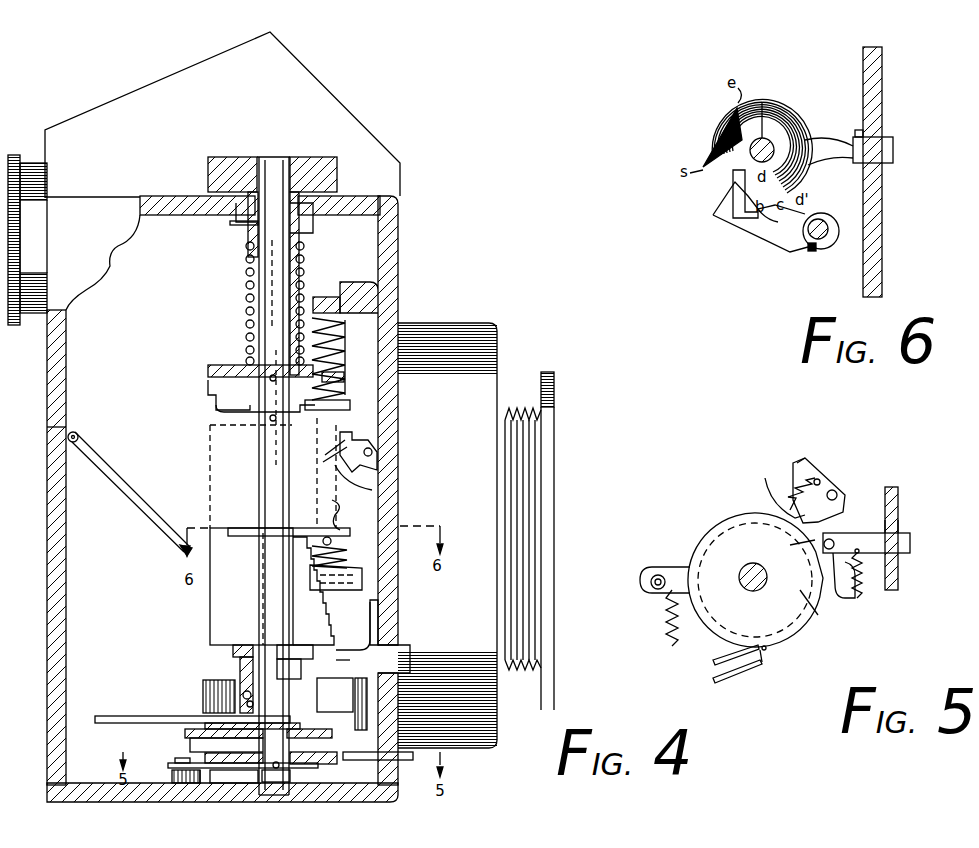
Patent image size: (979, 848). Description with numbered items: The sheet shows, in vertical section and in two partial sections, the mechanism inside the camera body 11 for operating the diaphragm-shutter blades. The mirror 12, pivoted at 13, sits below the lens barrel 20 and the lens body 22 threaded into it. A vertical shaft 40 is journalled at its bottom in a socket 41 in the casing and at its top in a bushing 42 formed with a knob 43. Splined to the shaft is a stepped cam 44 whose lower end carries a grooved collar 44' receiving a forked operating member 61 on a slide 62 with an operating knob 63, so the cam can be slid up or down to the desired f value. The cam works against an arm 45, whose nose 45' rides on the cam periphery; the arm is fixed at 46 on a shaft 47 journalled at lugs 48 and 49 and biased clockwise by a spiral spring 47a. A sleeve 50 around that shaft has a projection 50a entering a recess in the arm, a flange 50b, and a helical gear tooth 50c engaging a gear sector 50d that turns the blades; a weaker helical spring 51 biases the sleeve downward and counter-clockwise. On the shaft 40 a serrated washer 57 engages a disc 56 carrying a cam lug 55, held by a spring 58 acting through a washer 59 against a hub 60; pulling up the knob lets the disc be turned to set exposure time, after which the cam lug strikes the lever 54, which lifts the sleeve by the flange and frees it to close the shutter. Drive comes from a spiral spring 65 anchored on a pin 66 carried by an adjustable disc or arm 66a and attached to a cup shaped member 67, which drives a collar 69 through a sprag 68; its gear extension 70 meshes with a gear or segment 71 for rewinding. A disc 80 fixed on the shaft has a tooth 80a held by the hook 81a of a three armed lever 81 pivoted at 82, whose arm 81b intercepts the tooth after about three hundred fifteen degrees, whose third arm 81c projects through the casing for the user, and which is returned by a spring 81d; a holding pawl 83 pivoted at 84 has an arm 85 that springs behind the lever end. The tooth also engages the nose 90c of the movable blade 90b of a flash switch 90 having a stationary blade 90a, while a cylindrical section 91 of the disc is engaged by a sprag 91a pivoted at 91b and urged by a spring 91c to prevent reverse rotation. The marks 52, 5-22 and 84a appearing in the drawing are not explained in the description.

In FIG. 4, the camera body 11 is at (185, 212).
In FIG. 6, the camera body 11 is at (882, 83).
In FIG. 5, the camera body 11 is at (898, 498).
In FIG. 4, the mirror 12 is at (133, 495).
In FIG. 4, the mirror pivot 13 is at (78, 434).
In FIG. 4, the lens barrel 20 is at (452, 323).
In FIG. 4, the lens body 22 is at (548, 372).
In FIG. 4, the vertical shaft 40 is at (266, 456).
In FIG. 6, the vertical shaft 40 is at (745, 145).
In FIG. 5, the vertical shaft 40 is at (745, 566).
In FIG. 4, the socket 41 is at (300, 775).
In FIG. 4, the bushing 42 is at (247, 246).
In FIG. 4, the knob 43 is at (232, 165).
In FIG. 4, the cam 44 is at (273, 531).
In FIG. 6, the cam 44 is at (763, 137).
In FIG. 4, the grooved collar 44' is at (245, 658).
In FIG. 4, the arm 45 is at (290, 539).
In FIG. 6, the arm 45 is at (790, 219).
In FIG. 6, the nose 45' is at (721, 194).
In FIG. 4, the fixing point 46 is at (331, 541).
In FIG. 4, the shaft 47 is at (340, 349).
In FIG. 6, the shaft 47 is at (812, 216).
In FIG. 4, the spiral spring 47a is at (340, 558).
In FIG. 4, the lug 48 is at (362, 578).
In FIG. 4, the lug 49 is at (326, 297).
In FIG. 4, the sleeve 50 is at (348, 430).
In FIG. 4, the projection 50a is at (335, 505).
In FIG. 6, the projection 50a is at (816, 250).
In FIG. 4, the flange 50b is at (350, 405).
In FIG. 4, the gear tooth 50c is at (372, 490).
In FIG. 4, the gear sector 50d is at (373, 453).
In FIG. 4, the helical spring 51 is at (340, 329).
In FIG. 6, the pin 52 is at (761, 106).
In FIG. 6, the reference line 5-22 is at (745, 105).
In FIG. 4, the lever 54 is at (216, 390).
In FIG. 4, the cam lug 55 is at (344, 375).
In FIG. 4, the disc 56 is at (240, 365).
In FIG. 4, the washer 57 is at (246, 388).
In FIG. 4, the spring 58 is at (246, 297).
In FIG. 4, the washer 59 is at (313, 235).
In FIG. 4, the hub 60 is at (236, 212).
In FIG. 4, the forked operating member 61 is at (336, 655).
In FIG. 6, the forked operating member 61 is at (829, 161).
In FIG. 4, the slide 62 is at (378, 612).
In FIG. 6, the slide 62 is at (860, 138).
In FIG. 4, the operating knob 63 is at (400, 645).
In FIG. 6, the operating knob 63 is at (890, 140).
In FIG. 4, the spiral spring 65 is at (203, 686).
In FIG. 4, the pin 66 is at (358, 678).
In FIG. 4, the disc or arm 66a is at (271, 750).
In FIG. 4, the cup shaped member 67 is at (240, 672).
In FIG. 4, the sprag 68 is at (253, 704).
In FIG. 4, the collar 69 is at (251, 695).
In FIG. 4, the gear extension 70 is at (205, 724).
In FIG. 4, the gear or segment 71 is at (150, 716).
In FIG. 4, the disc 80 is at (230, 752).
In FIG. 5, the disc 80 is at (796, 618).
In FIG. 5, the tooth 80a is at (820, 576).
In FIG. 4, the three armed lever 81 is at (378, 760).
In FIG. 5, the three armed lever 81 is at (905, 553).
In FIG. 5, the hook 81a is at (836, 592).
In FIG. 5, the arm 81b is at (790, 545).
In FIG. 5, the third arm 81c is at (905, 533).
In FIG. 5, the spring 81d is at (860, 598).
In FIG. 5, the pivot 82 is at (832, 538).
In FIG. 5, the holding pawl 83 is at (840, 488).
In FIG. 5, the pivot 84 is at (833, 490).
In FIG. 5, the lever end 84a is at (800, 462).
In FIG. 5, the arm 85 is at (783, 495).
In FIG. 5, the switch 90 is at (722, 677).
In FIG. 5, the stationary blade 90a is at (735, 672).
In FIG. 5, the movable blade 90b is at (735, 658).
In FIG. 5, the nose 90c is at (768, 650).
In FIG. 4, the cylindrical section 91 is at (230, 783).
In FIG. 5, the cylindrical section 91 is at (722, 532).
In FIG. 4, the sprag 91a is at (222, 783).
In FIG. 5, the sprag 91a is at (668, 575).
In FIG. 4, the pivot 91b is at (184, 758).
In FIG. 5, the pivot 91b is at (655, 570).
In FIG. 5, the spring 91c is at (670, 615).